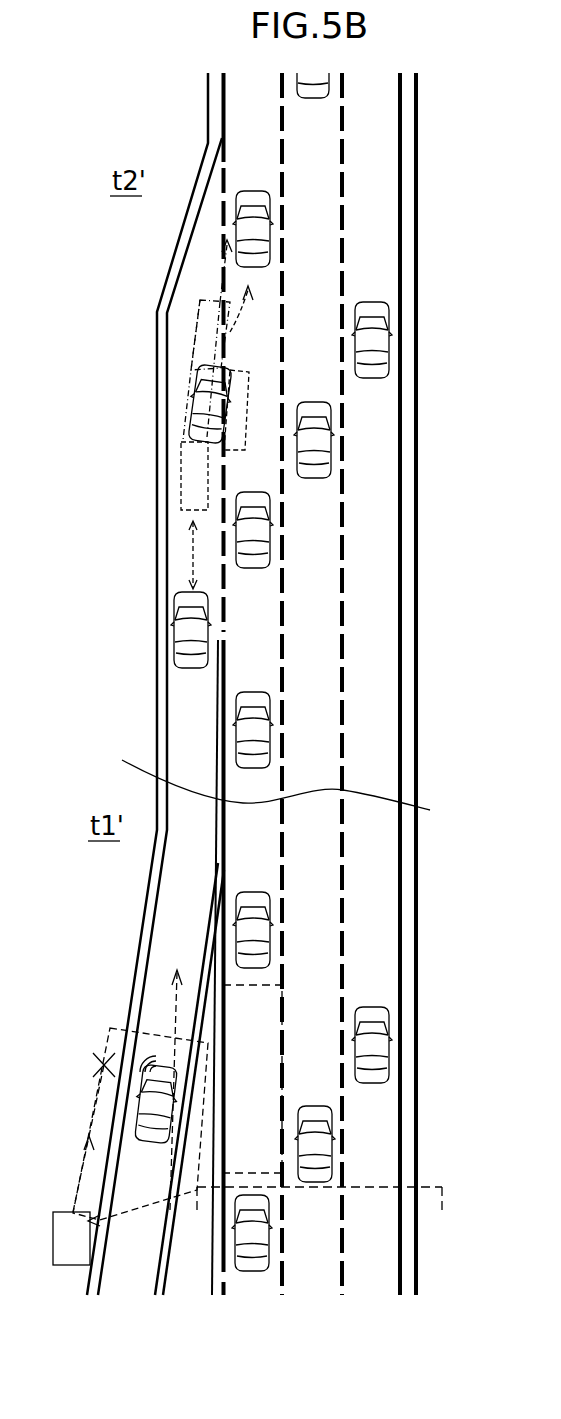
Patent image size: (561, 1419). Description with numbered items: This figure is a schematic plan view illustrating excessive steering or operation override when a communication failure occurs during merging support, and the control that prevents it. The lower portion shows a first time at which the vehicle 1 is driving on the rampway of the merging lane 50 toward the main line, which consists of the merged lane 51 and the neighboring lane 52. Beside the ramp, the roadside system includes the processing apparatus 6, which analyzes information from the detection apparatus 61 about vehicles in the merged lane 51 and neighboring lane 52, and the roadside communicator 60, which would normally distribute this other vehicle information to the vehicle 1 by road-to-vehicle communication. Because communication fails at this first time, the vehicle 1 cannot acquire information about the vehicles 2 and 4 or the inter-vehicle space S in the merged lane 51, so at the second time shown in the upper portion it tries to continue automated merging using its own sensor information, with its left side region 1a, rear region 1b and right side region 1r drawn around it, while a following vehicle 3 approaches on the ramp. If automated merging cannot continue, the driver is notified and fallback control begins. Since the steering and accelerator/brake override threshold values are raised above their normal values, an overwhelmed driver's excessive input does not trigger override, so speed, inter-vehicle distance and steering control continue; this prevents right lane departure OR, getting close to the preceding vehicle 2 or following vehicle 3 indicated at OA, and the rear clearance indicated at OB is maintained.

The vehicle 1 is at (200, 407).
The left side region of host vehicle 1a is at (182, 325).
The rear region of host vehicle 1b is at (180, 478).
The right side region of host vehicle 1r is at (262, 372).
The preceding vehicle 2 is at (256, 230).
The following vehicle 3 is at (182, 641).
The vehicle 4 is at (256, 532).
The processing apparatus 6 is at (53, 1232).
The merging lane 50 is at (130, 1273).
The merged lane 51 is at (250, 1273).
The neighboring lane 52 is at (320, 1273).
The roadside communicator 60 is at (140, 1027).
The detection apparatus 61 is at (367, 1187).
The getting close to preceding or following vehicle OA is at (219, 290).
The rear clearance distance OB is at (190, 558).
The right lane departure OR is at (250, 472).
The inter-vehicle space S is at (290, 1077).